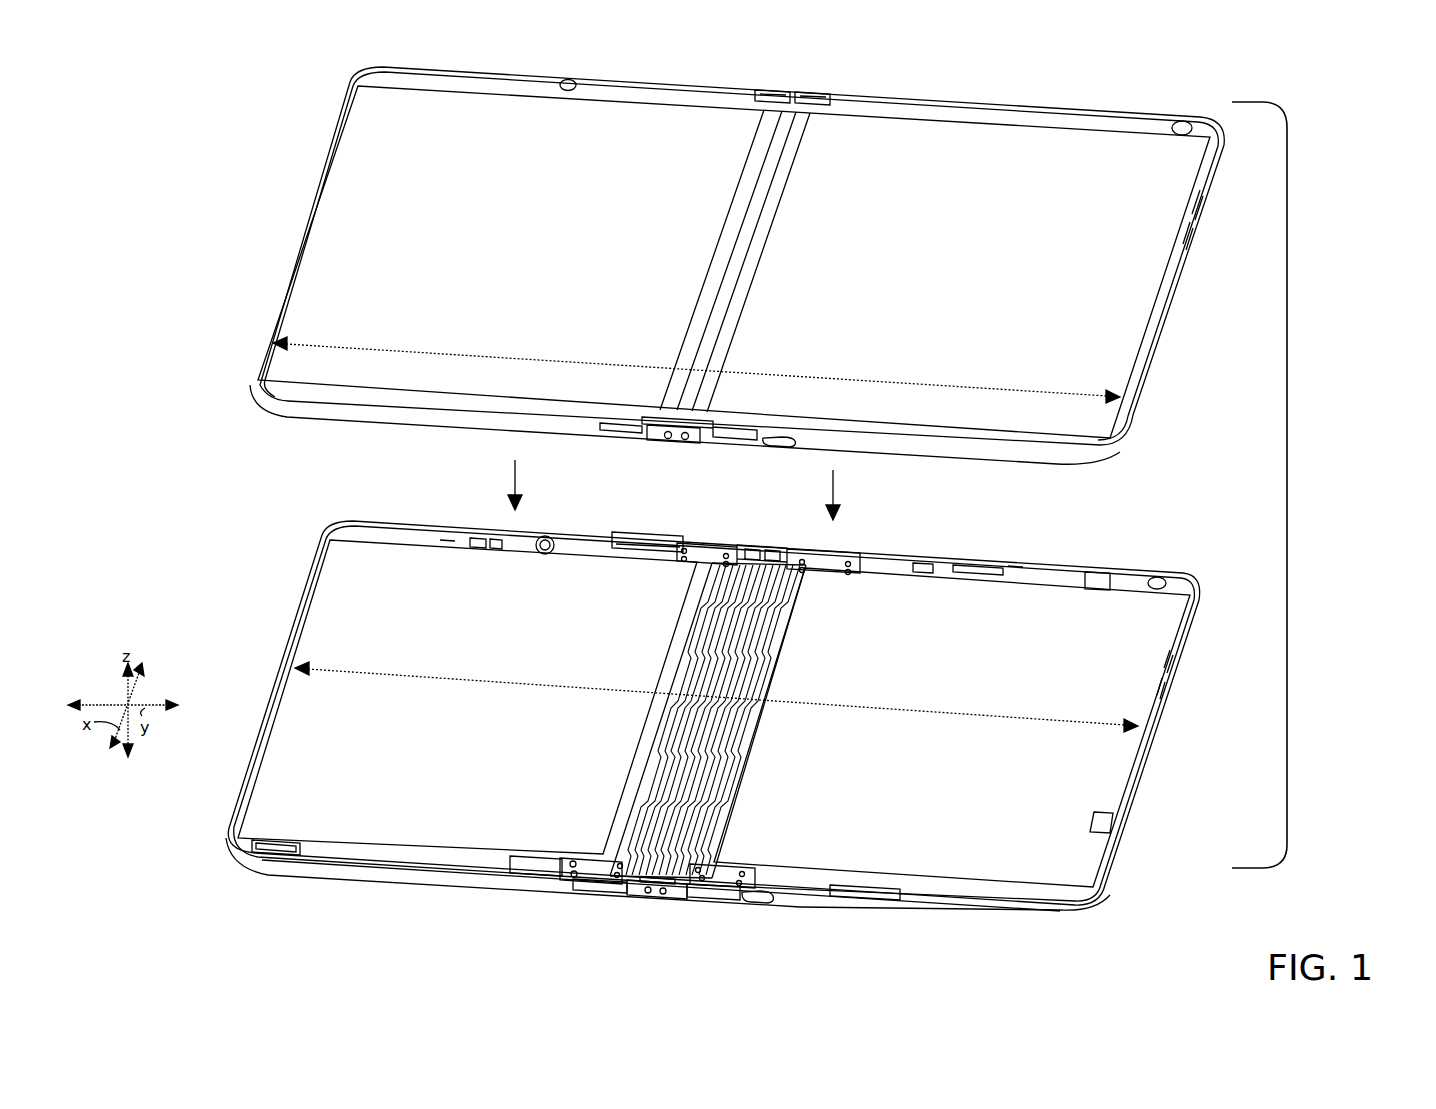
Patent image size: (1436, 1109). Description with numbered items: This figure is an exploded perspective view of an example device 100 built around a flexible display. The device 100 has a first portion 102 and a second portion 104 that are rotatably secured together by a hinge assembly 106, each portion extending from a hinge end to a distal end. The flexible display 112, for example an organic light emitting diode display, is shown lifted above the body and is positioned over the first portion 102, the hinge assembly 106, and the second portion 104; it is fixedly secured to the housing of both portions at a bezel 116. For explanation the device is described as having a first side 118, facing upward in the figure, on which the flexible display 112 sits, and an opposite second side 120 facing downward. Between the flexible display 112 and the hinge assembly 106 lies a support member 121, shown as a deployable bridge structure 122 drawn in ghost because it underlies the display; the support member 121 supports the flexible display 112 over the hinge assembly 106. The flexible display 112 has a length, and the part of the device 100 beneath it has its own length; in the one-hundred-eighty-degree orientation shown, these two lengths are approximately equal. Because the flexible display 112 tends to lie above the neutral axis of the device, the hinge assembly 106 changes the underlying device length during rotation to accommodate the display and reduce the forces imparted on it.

The device 100 is at (1288, 428).
The first portion 102 is at (293, 612).
The second portion 104 is at (1017, 525).
The hinge assembly 106 is at (657, 900).
The flexible display 112 is at (318, 210).
The bezel 116 is at (330, 404).
The first side 118 is at (352, 155).
The second side 120 is at (455, 890).
The support member 121 is at (640, 778).
The bridge structure 122 is at (727, 773).